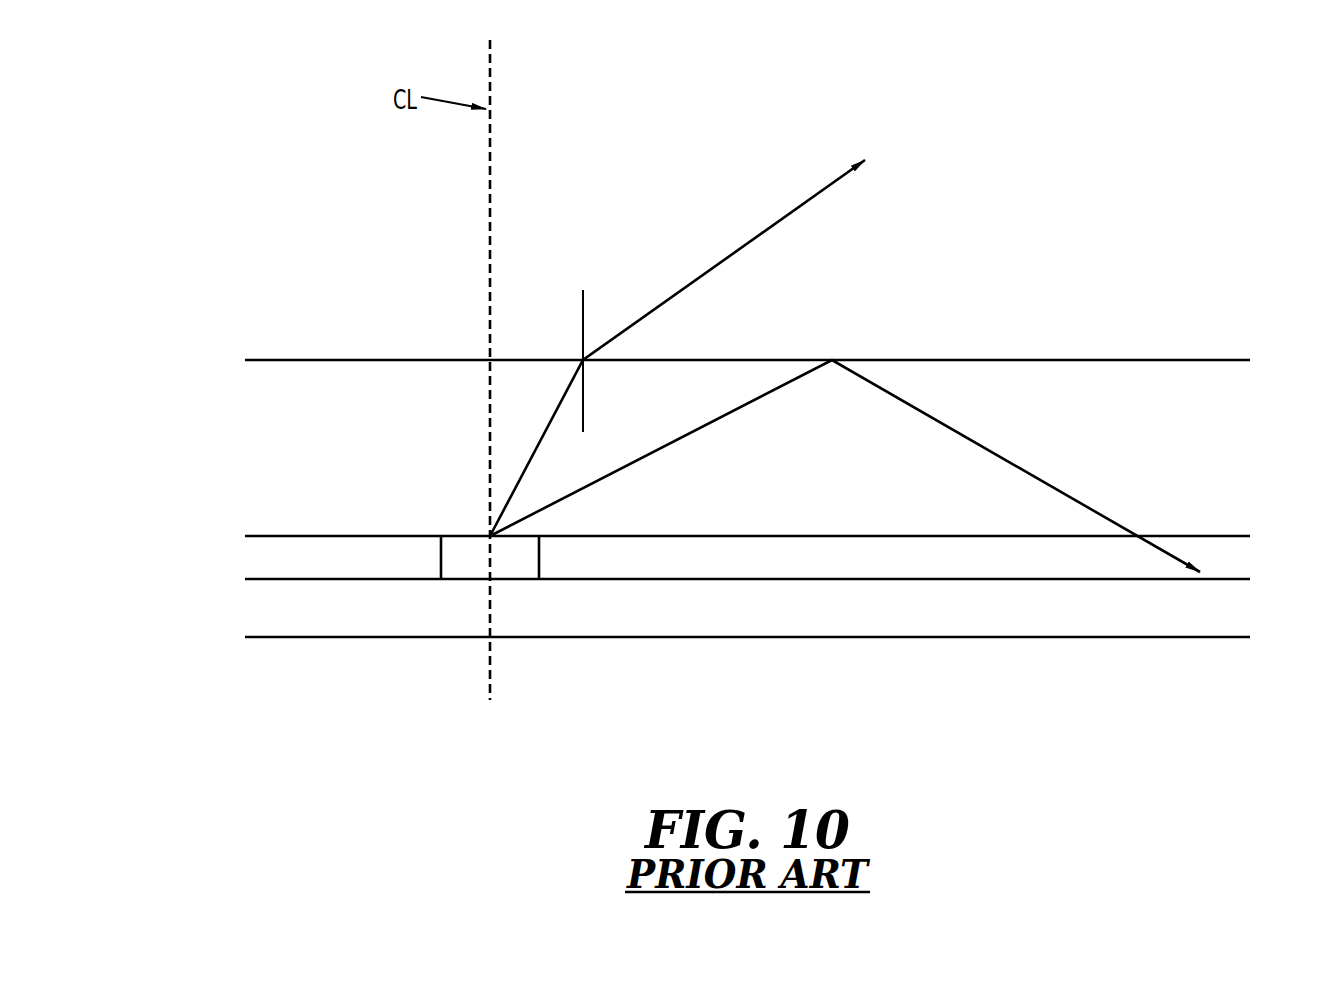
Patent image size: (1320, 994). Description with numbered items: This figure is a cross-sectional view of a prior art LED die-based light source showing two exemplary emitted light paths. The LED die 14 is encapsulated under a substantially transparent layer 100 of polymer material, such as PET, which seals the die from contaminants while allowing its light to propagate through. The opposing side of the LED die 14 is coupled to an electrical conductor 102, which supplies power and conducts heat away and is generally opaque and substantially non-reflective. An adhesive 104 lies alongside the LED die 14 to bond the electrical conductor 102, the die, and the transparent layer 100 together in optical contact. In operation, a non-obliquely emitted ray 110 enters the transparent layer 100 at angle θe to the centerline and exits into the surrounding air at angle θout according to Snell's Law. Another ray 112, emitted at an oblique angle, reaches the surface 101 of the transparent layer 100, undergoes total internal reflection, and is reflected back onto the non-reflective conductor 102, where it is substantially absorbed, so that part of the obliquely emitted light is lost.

The LED die 14 is at (462, 566).
The transparent layer 100 is at (270, 417).
The surface 101 is at (312, 357).
The electrical conductor 102 is at (270, 610).
The adhesive 104 is at (270, 560).
The non-obliquely emitted ray 110 is at (805, 200).
The obliquely emitted ray 112 is at (740, 398).